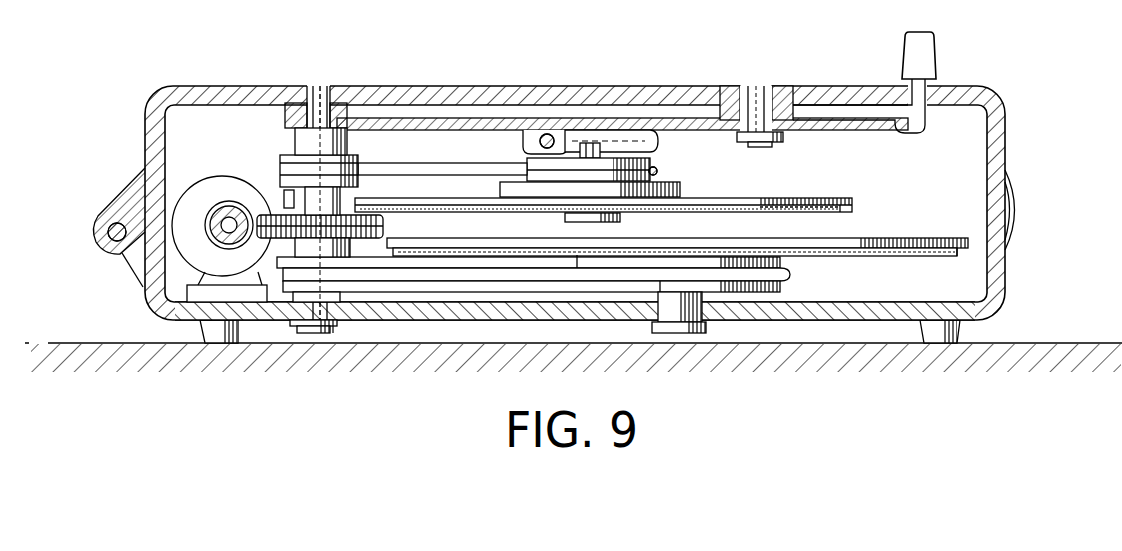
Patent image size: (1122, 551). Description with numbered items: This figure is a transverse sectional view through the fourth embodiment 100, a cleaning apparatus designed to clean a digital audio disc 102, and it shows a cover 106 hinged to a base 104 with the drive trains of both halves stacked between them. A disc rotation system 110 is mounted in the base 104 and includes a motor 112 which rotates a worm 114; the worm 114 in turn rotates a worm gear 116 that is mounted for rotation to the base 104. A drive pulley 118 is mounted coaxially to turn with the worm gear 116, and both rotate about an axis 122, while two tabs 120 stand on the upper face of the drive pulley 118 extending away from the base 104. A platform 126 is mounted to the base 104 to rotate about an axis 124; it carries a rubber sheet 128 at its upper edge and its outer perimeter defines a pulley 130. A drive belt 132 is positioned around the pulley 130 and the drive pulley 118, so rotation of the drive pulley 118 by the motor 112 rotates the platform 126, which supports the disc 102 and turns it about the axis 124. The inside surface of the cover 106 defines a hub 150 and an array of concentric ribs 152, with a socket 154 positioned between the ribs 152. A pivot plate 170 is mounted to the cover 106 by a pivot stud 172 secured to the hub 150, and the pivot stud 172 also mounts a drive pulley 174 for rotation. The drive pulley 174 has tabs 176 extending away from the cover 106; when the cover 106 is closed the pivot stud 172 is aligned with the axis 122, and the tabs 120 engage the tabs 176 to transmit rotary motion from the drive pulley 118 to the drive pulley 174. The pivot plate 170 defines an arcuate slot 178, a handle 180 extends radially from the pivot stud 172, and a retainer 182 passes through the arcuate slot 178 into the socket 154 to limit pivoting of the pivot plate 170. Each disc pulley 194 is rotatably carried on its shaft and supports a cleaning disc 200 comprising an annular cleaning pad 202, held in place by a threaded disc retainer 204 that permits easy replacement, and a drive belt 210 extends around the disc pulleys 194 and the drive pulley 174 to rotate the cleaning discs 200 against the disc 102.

The fourth embodiment 100 is at (599, 178).
The digital audio disc 102 is at (656, 259).
The base 104 is at (1012, 262).
The cover 106 is at (586, 213).
The disc rotation system 110 is at (470, 290).
The motor 112 is at (222, 215).
The worm 114 is at (227, 203).
The worm gear 116 is at (384, 229).
The drive pulley 118 is at (345, 252).
The tabs 120 is at (613, 206).
The axis 122 is at (355, 318).
The axis 124 is at (658, 320).
The platform 126 is at (783, 262).
The rubber sheet 128 is at (942, 257).
The pulley 130 is at (783, 288).
The drive belt 132 is at (515, 283).
The hub 150 is at (285, 87).
The concentric ribs 152 is at (728, 87).
The socket 154 is at (789, 109).
The pivot plate 170 is at (493, 118).
The pivot stud 172 is at (332, 87).
The drive pulley 174 is at (360, 160).
The tabs 176 is at (283, 200).
The arcuate slot 178 is at (755, 148).
The handle 180 is at (932, 42).
The retainer 182 is at (758, 143).
The disc pulley 194 is at (658, 170).
The cleaning disc 200 is at (820, 199).
The annular cleaning pad 202 is at (830, 213).
The disc retainer 204 is at (621, 221).
The drive belt 210 is at (463, 172).